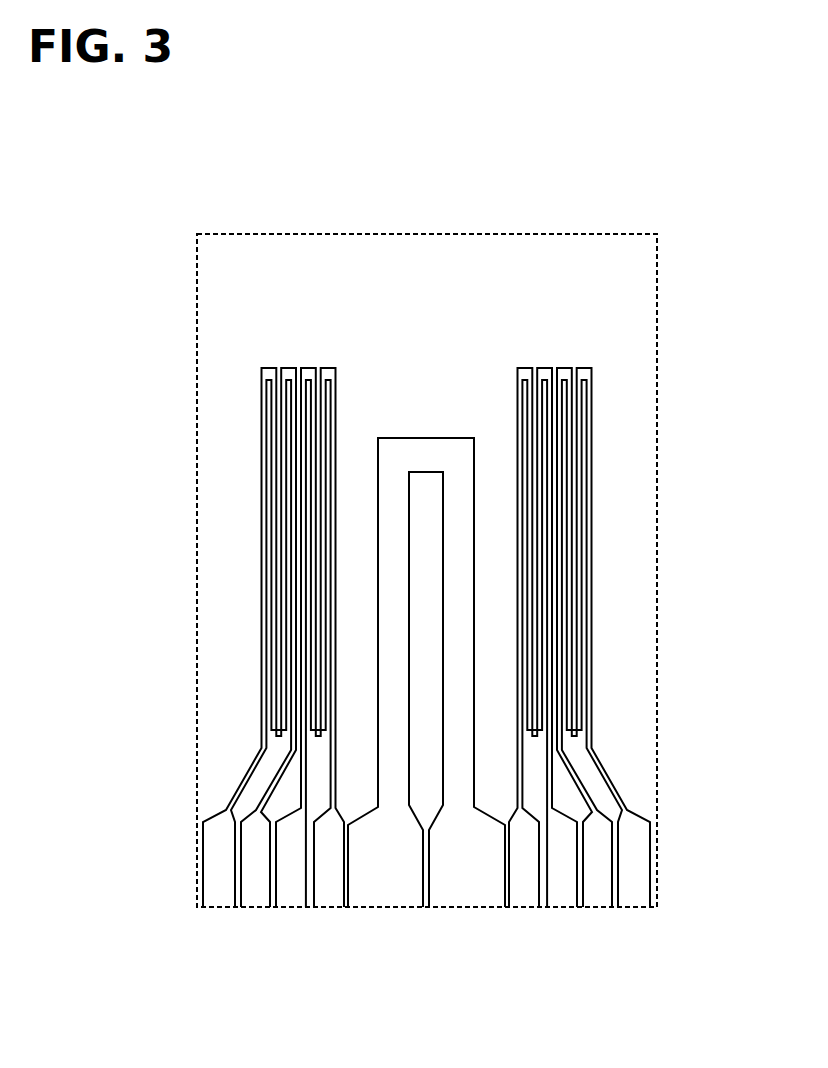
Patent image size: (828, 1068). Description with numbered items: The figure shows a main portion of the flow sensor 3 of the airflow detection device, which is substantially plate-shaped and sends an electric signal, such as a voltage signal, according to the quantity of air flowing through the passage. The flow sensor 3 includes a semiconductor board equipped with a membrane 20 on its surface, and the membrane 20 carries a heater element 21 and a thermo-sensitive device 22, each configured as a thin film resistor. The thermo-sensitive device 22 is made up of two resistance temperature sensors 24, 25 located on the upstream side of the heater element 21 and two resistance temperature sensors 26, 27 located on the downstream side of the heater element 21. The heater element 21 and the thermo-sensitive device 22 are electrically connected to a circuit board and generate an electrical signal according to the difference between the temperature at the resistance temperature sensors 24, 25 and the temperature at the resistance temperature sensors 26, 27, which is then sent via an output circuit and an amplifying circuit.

The flow sensor 3 is at (658, 258).
The membrane 20 is at (635, 410).
The heater element 21 is at (429, 452).
The thermo-sensitive device 22 is at (338, 322).
The resistance temperature sensor 24 is at (297, 363).
The resistance temperature sensor 25 is at (335, 363).
The resistance temperature sensor 26 is at (551, 363).
The resistance temperature sensor 27 is at (590, 363).